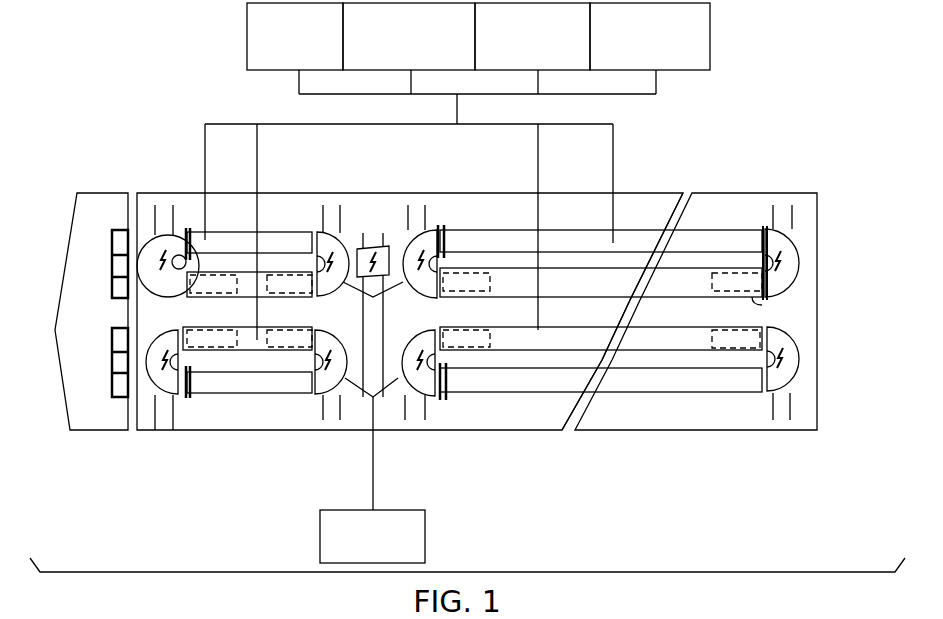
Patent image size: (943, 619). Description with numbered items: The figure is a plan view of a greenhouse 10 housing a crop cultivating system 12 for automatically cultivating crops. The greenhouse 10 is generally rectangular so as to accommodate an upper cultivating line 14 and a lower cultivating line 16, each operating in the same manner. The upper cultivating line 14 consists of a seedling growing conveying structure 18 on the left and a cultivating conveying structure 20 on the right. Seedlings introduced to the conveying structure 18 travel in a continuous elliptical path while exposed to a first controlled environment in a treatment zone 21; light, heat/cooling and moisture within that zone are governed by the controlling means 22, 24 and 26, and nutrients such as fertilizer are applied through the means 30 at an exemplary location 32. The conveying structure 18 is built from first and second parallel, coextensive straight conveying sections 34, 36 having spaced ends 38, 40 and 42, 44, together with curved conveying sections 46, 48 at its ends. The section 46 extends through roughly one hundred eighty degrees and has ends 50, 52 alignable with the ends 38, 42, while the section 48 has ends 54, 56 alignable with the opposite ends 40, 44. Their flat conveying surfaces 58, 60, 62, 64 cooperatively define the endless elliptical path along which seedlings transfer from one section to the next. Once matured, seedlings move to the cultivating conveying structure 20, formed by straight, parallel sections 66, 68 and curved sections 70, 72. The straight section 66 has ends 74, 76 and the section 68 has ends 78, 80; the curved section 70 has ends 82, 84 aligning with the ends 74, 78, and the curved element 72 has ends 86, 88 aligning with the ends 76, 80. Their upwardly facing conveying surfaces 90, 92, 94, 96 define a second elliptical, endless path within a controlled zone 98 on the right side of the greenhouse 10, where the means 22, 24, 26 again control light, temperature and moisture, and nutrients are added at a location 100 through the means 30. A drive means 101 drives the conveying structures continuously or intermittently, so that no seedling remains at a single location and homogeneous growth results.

The greenhouse 10 is at (808, 176).
The crop cultivating system 12 is at (637, 215).
The upper cultivating line 14 is at (819, 268).
The lower cultivating line 16 is at (820, 357).
The seedling growing conveying structure 18 is at (242, 225).
The cultivating conveying structure 20 is at (705, 222).
The treatment zone 21 is at (225, 402).
The light controlling means 22 is at (286, 62).
The heat/cooling controlling means 24 is at (400, 65).
The moisture controlling means 26 is at (523, 62).
The nutrient treating means 30 is at (641, 62).
The nutrient treatment location 32 is at (193, 232).
The first straight conveying section 34 is at (217, 240).
The second straight conveying section 36 is at (210, 312).
The end of first straight conveying section 38 is at (168, 232).
The opposite end of first straight conveying section 40 is at (328, 245).
The end of second straight conveying section 42 is at (185, 285).
The opposite end of second straight conveying section 44 is at (348, 335).
The curved/arcuate conveying section 46 is at (152, 258).
The curved/arcuate conveying section 48 is at (340, 245).
The end of curved conveying section 50 is at (160, 283).
The end of curved conveying section 52 is at (240, 302).
The end of curved conveying section 54 is at (304, 246).
The end of curved conveying section 56 is at (305, 312).
The flat conveying surface 58 is at (263, 237).
The flat conveying surface 60 is at (258, 312).
The flat conveying surface 62 is at (157, 243).
The flat conveying surface 64 is at (353, 243).
The straight conveying section 66 is at (648, 238).
The straight conveying section 68 is at (675, 290).
The curved conveying section 70 is at (418, 238).
The curved conveying section 72 is at (795, 245).
The end of straight conveying section 74 is at (432, 238).
The end of straight conveying section 76 is at (780, 230).
The end of straight conveying section 78 is at (403, 332).
The end of straight conveying section 80 is at (770, 280).
The end of curved conveying section 82 is at (455, 245).
The end of curved conveying section 84 is at (453, 332).
The end of curved element 86 is at (764, 243).
The end of curved element 88 is at (752, 292).
The upwardly facing conveying surface 90 is at (580, 240).
The upwardly facing conveying surface 92 is at (665, 290).
The upwardly facing conveying surface 94 is at (393, 332).
The upwardly facing conveying surface 96 is at (793, 255).
The controlled environment zone 98 is at (708, 400).
The nutrient addition location 100 is at (447, 245).
The drive means 101 is at (362, 561).